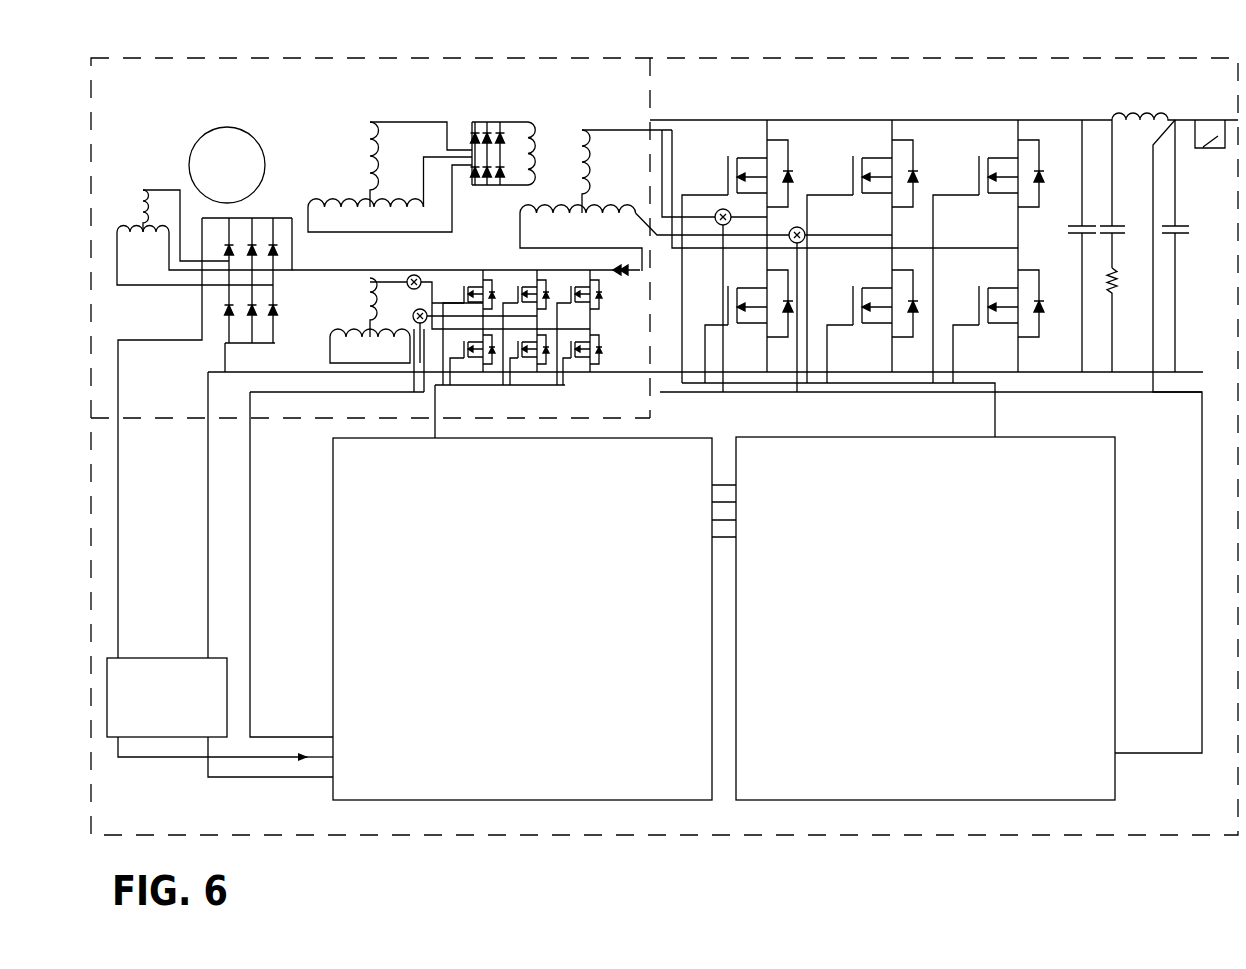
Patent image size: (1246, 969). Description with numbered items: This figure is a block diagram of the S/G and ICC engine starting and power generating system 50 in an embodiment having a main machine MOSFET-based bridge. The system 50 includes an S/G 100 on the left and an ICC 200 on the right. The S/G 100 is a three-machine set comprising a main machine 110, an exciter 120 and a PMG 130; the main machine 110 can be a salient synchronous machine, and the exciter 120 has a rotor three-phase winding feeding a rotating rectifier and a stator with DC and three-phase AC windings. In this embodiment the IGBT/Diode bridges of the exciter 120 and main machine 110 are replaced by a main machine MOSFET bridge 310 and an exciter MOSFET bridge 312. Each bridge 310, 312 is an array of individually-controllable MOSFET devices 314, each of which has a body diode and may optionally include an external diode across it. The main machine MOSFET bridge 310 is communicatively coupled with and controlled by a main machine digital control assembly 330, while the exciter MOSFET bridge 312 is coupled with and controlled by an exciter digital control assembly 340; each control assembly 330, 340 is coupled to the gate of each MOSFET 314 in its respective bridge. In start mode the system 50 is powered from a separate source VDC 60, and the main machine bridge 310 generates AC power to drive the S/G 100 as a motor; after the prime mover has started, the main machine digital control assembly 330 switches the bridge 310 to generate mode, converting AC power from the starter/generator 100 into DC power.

The S/G and ICC engine starting and power generating system 50 is at (680, 56).
The S/G 100 is at (369, 55).
The ICC 200 is at (887, 55).
The PMG 130 is at (253, 127).
The exciter 120 is at (472, 113).
The main machine 110 is at (598, 120).
The MOSFET device 314 is at (802, 154).
The main machine MOSFET bridge 310 is at (966, 114).
The exciter MOSFET bridge 312 is at (603, 322).
The exciter digital control assembly 340 is at (552, 476).
The main machine digital control assembly 330 is at (950, 476).
The VDC 60 is at (1210, 153).